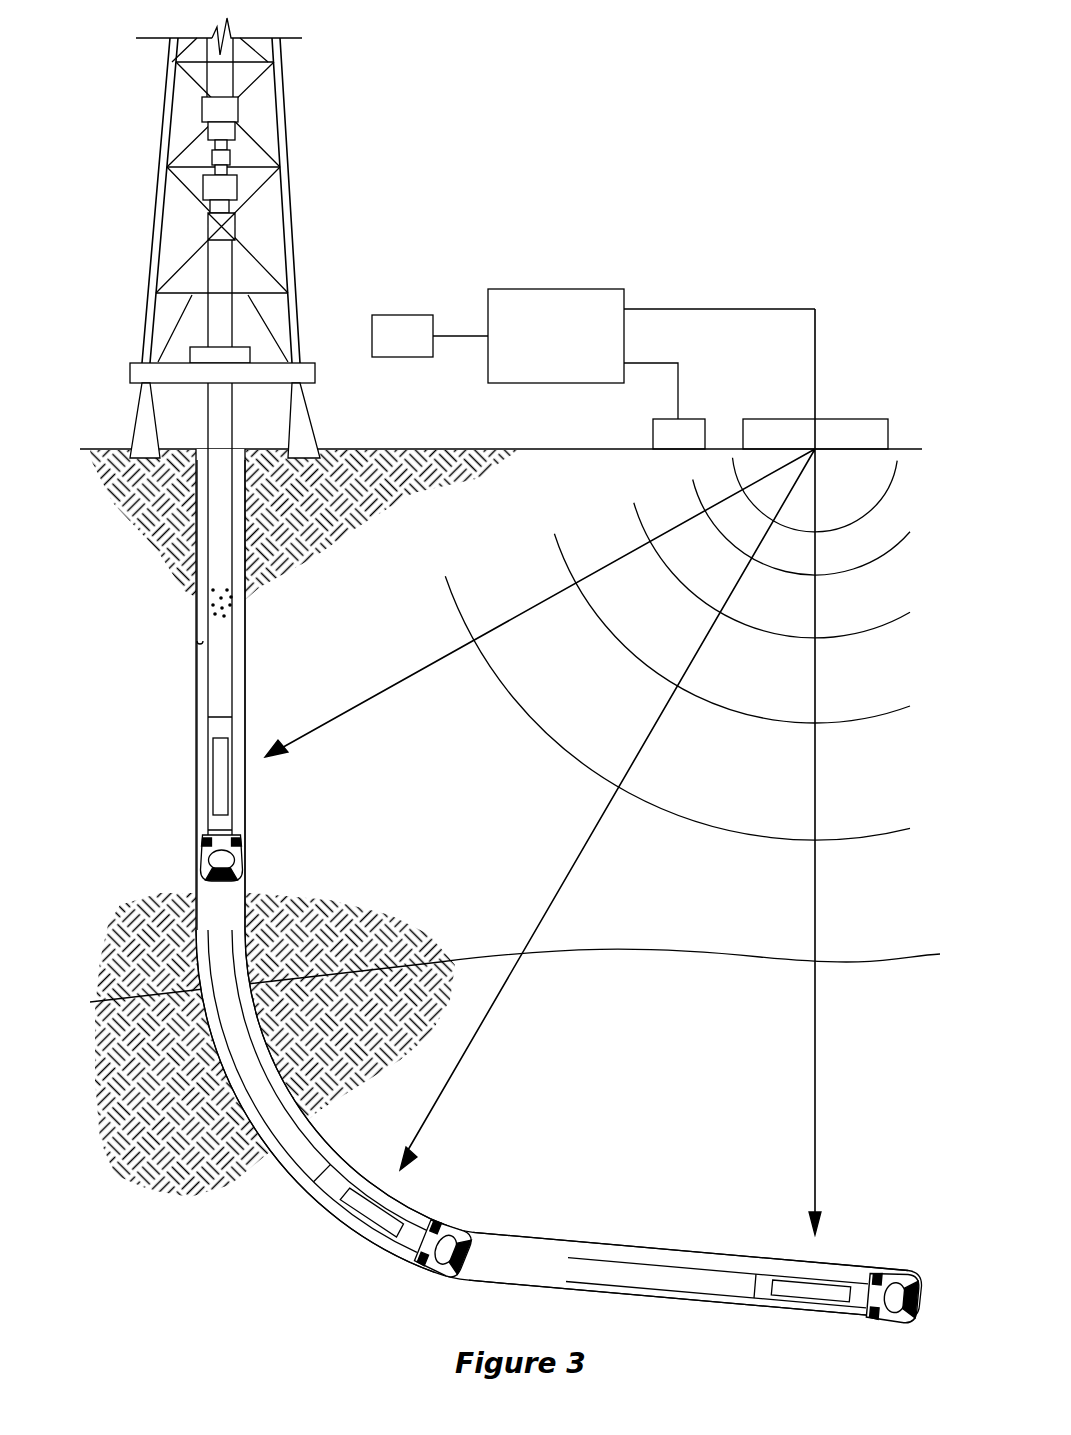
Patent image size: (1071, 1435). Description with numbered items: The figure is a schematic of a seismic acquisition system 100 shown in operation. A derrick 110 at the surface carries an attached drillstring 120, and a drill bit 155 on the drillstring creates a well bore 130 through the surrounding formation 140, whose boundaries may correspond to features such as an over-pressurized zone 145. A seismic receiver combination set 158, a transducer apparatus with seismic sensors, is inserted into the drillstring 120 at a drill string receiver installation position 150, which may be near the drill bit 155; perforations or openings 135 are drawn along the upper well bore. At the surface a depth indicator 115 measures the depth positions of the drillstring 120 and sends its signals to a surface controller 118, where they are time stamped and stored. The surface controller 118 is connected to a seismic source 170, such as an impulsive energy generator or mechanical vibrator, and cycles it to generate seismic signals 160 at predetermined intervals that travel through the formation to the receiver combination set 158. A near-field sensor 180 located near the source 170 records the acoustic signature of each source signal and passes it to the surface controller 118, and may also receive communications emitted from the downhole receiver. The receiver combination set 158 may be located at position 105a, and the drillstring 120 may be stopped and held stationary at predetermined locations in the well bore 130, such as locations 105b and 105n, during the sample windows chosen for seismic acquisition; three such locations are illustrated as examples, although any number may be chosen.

The system 100 is at (636, 134).
The derrick 110 is at (286, 140).
The depth indicator 115 is at (404, 315).
The surface controller 118 is at (585, 289).
The drillstring 120 is at (206, 686).
The well bore 130 is at (203, 645).
The perforations 135 is at (210, 613).
The formation 140 is at (868, 913).
The over-pressurized zone 145 is at (868, 1102).
The drill string receiver installation position 150 is at (214, 726).
The drill bit 155 is at (206, 856).
The seismic receiver combination set 158 is at (214, 802).
The seismic signals 160 is at (868, 688).
The seismic source 170 is at (860, 419).
The near-field sensor 180 is at (690, 419).
The position 105a is at (892, 1244).
The location 105b is at (486, 1194).
The location 105n is at (310, 816).